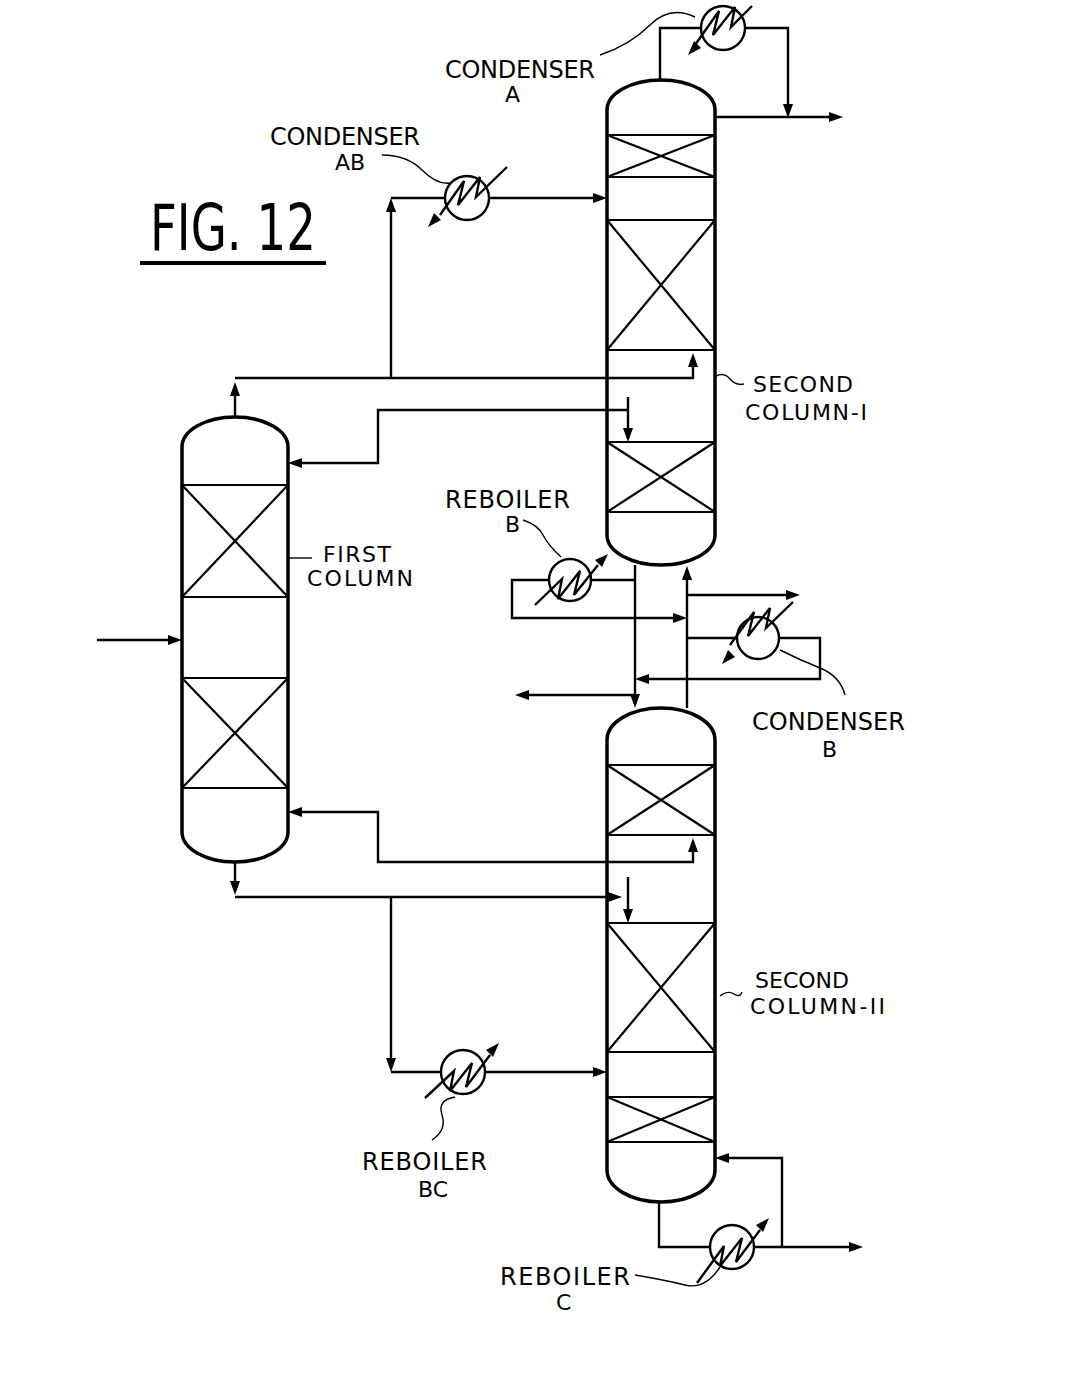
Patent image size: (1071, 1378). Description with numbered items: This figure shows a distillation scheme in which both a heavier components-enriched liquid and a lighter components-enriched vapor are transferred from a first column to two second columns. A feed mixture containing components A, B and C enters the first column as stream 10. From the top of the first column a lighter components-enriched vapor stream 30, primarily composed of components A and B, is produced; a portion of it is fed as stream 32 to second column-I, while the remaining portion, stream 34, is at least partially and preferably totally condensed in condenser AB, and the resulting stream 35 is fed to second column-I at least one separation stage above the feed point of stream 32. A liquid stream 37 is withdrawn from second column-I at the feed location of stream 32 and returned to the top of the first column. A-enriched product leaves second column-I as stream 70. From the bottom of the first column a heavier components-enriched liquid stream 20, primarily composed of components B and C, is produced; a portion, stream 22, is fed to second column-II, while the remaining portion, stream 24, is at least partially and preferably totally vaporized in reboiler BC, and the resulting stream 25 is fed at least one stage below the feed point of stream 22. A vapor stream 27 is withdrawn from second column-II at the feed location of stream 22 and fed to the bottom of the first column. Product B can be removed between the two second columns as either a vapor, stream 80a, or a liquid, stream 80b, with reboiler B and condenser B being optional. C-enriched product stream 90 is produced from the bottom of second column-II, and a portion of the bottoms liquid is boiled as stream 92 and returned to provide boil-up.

The feed mixture stream 10 is at (128, 649).
The heavier components-enriched liquid stream 20 is at (227, 878).
The first portion of BC liquid stream 22 is at (533, 900).
The remaining portion of BC liquid stream 24 is at (388, 977).
The vaporized stream from reboiler BC 25 is at (543, 1070).
The vapor stream withdrawn from second column 27 is at (521, 862).
The lighter components-enriched vapor stream 30 is at (229, 399).
The portion of vapor stream fed to second column 32 is at (517, 378).
The remaining portion of vapor stream 34 is at (393, 291).
The condensed stream from condenser AB 35 is at (540, 200).
The liquid stream withdrawn from second column 37 is at (484, 412).
The A-enriched product stream 70 is at (800, 118).
The vapor product B stream 80a is at (743, 590).
The liquid product B stream 80b is at (568, 690).
The C-enriched product stream 90 is at (822, 1250).
The boiled C-enriched bottoms stream 92 is at (770, 1158).